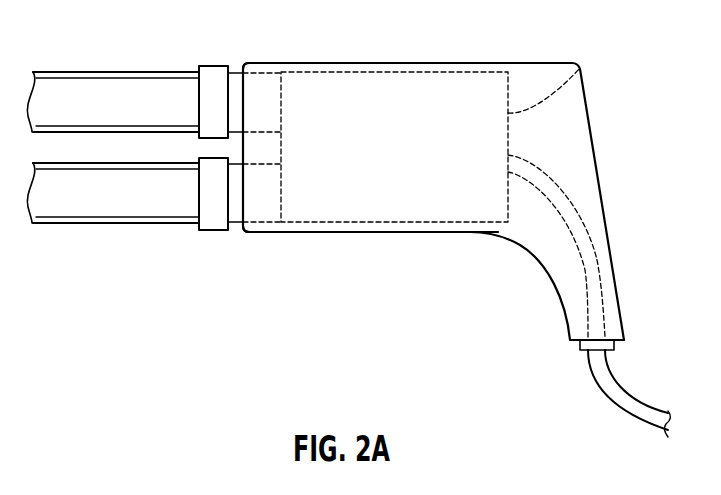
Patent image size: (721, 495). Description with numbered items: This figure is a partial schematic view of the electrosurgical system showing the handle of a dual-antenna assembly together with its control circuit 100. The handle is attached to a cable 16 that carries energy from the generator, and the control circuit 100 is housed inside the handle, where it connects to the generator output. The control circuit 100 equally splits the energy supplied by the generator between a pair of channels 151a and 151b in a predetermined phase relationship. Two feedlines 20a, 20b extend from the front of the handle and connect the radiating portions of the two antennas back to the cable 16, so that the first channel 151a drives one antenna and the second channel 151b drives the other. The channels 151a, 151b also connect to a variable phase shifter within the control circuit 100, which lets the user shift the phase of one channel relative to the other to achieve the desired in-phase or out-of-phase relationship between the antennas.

The control circuit 100 is at (582, 69).
The cable 16 is at (607, 315).
The feedline 20a is at (95, 85).
The feedline 20b is at (95, 220).
The channel 151a is at (253, 82).
The channel 151b is at (254, 218).